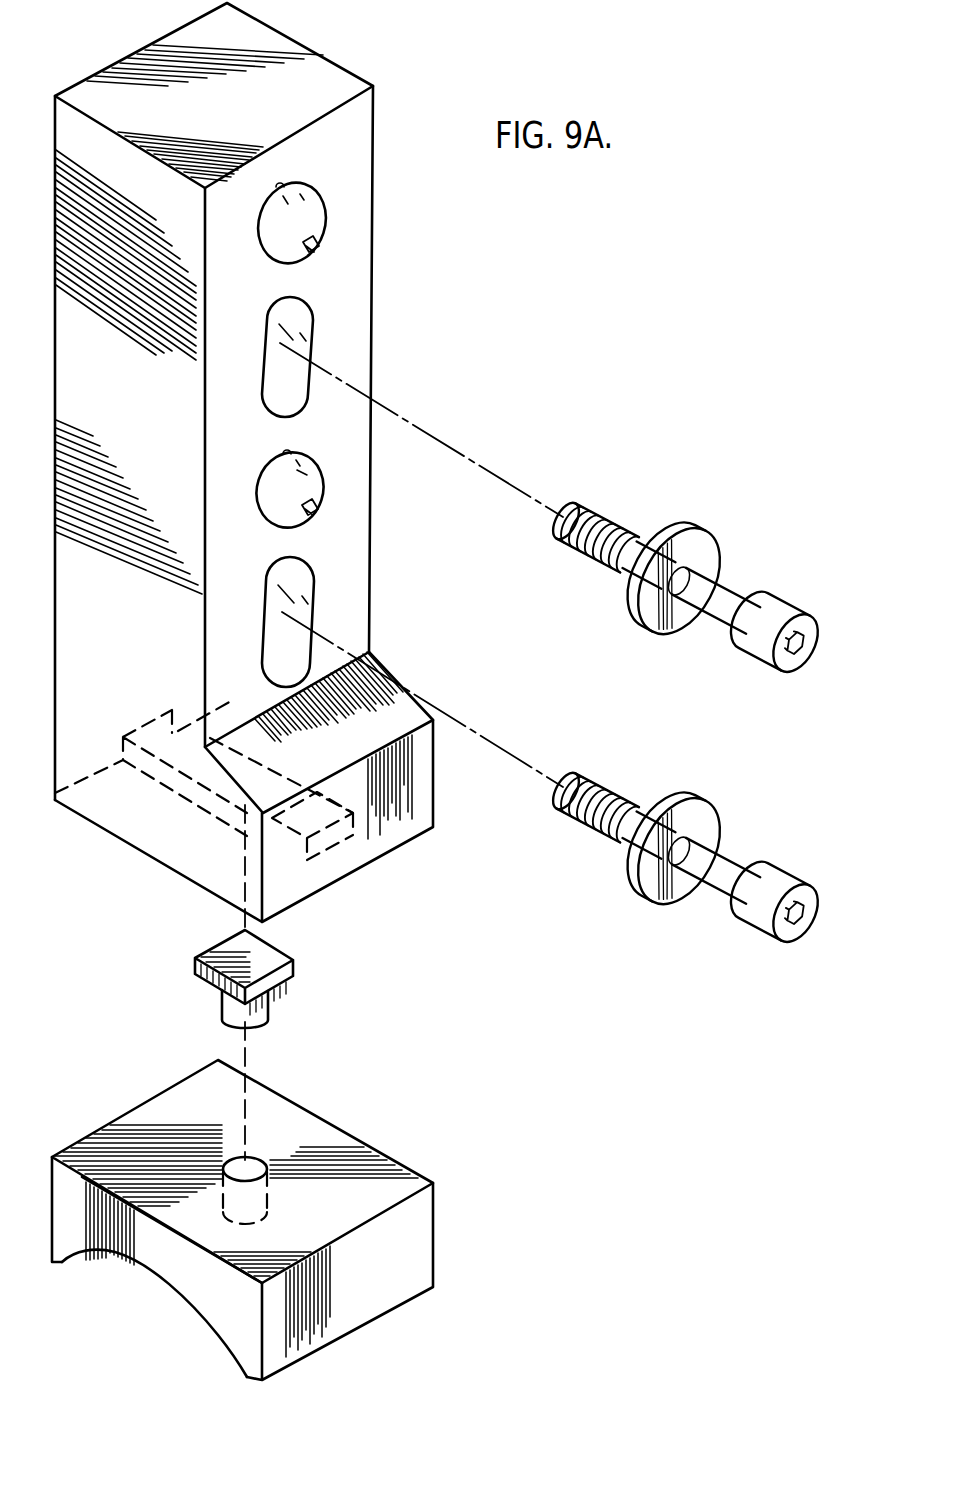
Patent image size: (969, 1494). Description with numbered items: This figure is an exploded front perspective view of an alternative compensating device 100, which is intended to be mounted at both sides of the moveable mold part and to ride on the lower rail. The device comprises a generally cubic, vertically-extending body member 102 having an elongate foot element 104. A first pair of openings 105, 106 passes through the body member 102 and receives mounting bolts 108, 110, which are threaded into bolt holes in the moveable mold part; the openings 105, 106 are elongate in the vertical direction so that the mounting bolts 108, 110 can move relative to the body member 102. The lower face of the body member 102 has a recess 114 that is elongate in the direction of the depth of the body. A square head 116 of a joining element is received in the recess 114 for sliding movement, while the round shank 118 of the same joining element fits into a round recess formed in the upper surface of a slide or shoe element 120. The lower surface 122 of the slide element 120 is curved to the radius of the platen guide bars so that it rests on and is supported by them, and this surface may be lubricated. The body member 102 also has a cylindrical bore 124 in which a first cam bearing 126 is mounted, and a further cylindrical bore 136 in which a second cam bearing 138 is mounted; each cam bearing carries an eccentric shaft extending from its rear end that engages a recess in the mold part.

The compensating device 100 is at (445, 691).
The body member 102 is at (352, 280).
The foot element 104 is at (152, 837).
The opening 105 is at (303, 347).
The opening 106 is at (270, 603).
The mounting bolt 108 is at (732, 600).
The mounting bolt 110 is at (737, 870).
The recess 114 is at (373, 863).
The square head 116 is at (273, 950).
The round shank 118 is at (253, 1017).
The slide element 120 is at (387, 1163).
The lower surface 122 is at (110, 1257).
The cylindrical bore 124 is at (320, 488).
The first cam bearing 126 is at (278, 482).
The further cylindrical bore 136 is at (313, 193).
The second cam bearing 138 is at (273, 242).